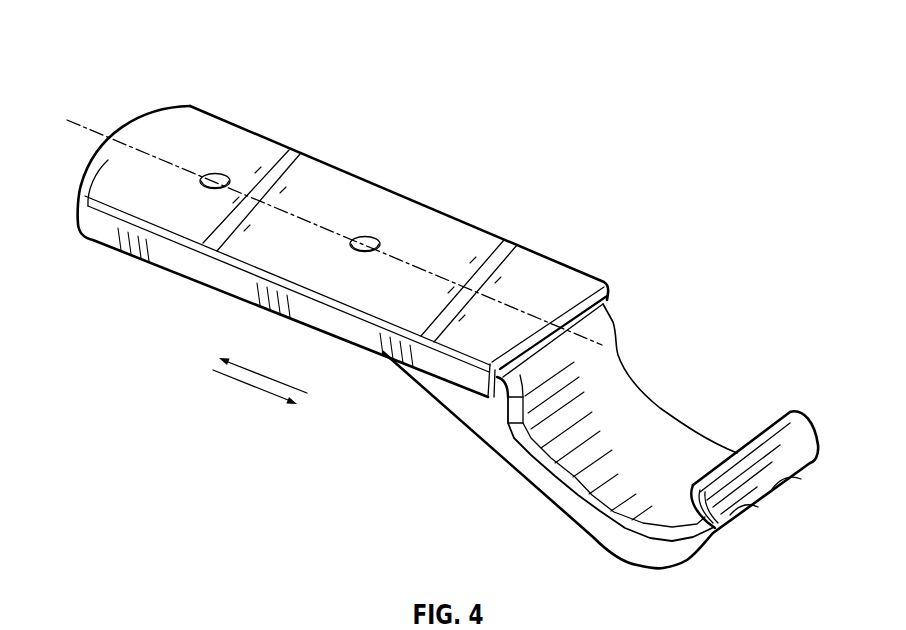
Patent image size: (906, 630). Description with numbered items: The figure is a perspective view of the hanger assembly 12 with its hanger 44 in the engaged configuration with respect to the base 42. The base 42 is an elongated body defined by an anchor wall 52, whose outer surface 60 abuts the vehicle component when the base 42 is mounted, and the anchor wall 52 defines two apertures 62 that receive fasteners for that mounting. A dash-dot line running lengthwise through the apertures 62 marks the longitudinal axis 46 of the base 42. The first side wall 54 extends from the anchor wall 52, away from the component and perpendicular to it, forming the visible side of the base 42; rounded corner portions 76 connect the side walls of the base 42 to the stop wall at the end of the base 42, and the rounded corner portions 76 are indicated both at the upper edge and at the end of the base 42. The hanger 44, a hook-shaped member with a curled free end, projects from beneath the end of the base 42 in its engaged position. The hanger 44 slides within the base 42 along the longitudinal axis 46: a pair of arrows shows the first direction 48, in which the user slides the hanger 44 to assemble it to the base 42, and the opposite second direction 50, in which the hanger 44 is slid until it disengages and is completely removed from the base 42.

The hanger assembly 12 is at (126, 60).
The base 42 is at (453, 226).
The hanger 44 is at (655, 418).
The longitudinal axis 46 is at (70, 123).
The first direction 48 is at (261, 374).
The second direction 50 is at (260, 388).
The anchor wall 52 is at (318, 168).
The first side wall 54 is at (208, 279).
The outer surface 60 is at (363, 192).
The apertures 62 is at (215, 173).
The rounded corner portions 76 is at (190, 104).